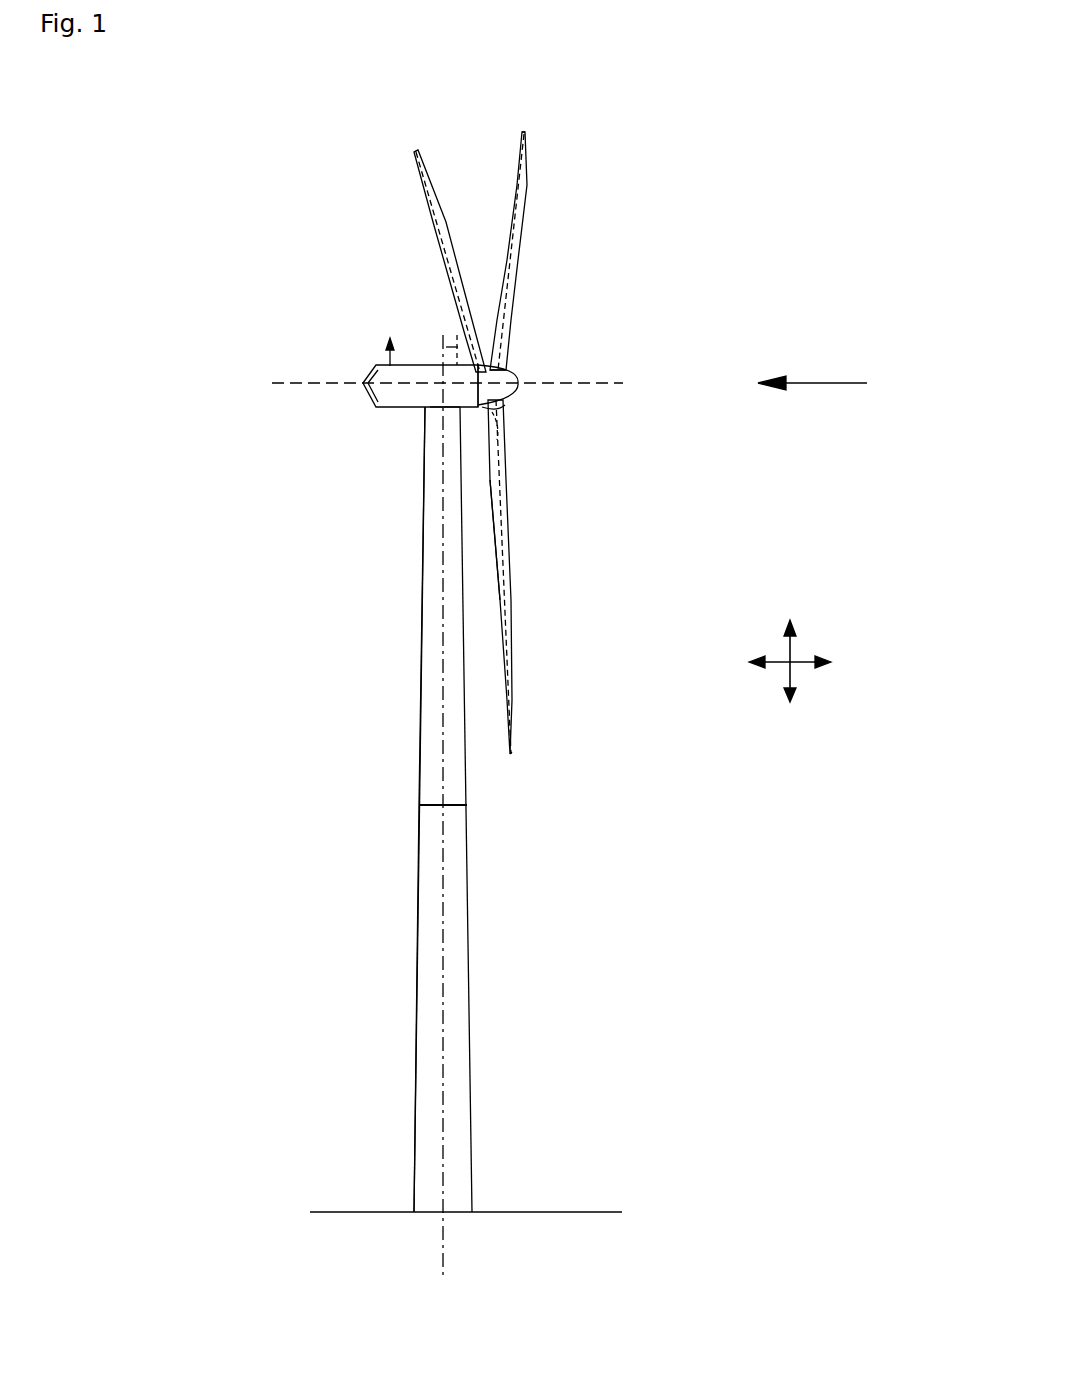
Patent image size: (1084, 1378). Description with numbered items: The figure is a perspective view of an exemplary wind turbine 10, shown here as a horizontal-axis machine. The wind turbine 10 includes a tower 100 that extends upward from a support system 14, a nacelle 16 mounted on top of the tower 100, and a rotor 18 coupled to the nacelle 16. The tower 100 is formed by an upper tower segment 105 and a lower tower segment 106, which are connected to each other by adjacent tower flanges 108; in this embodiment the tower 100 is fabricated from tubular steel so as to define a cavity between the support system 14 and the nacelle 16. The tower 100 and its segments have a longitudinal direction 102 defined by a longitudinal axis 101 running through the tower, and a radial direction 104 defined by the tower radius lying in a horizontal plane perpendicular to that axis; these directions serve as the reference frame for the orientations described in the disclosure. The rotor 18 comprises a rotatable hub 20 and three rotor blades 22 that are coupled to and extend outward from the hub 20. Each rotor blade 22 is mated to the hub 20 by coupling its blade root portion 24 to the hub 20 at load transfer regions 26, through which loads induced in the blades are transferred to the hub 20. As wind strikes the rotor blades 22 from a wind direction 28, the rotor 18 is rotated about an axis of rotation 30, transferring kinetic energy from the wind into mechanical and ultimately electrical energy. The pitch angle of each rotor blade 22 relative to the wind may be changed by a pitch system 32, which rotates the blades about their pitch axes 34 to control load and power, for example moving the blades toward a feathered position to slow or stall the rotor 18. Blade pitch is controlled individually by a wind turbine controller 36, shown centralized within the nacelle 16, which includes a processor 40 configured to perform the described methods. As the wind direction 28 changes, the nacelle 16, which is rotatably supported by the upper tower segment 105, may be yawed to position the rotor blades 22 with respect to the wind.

The wind turbine 10 is at (183, 150).
The support system 14 is at (370, 1210).
The nacelle 16 is at (395, 407).
The rotor 18 is at (522, 284).
The rotatable hub 20 is at (516, 383).
The rotor blade 22 is at (440, 225).
The blade root portion 24 is at (508, 495).
The load transfer region 26 is at (497, 407).
The wind direction 28 is at (834, 382).
The axis of rotation 30 is at (590, 386).
The pitch system 32 is at (497, 440).
The pitch axis 34 is at (410, 160).
The wind turbine controller 36 is at (437, 433).
The processor 40 is at (452, 347).
The tower 100 is at (418, 975).
The longitudinal axis 101 is at (447, 852).
The longitudinal direction 102 is at (793, 667).
The radial direction 104 is at (800, 658).
The upper tower segment 105 is at (424, 594).
The lower tower segment 106 is at (418, 905).
The tower flange 108 is at (419, 805).